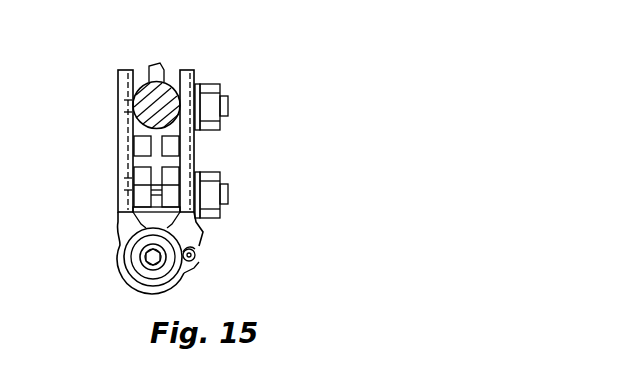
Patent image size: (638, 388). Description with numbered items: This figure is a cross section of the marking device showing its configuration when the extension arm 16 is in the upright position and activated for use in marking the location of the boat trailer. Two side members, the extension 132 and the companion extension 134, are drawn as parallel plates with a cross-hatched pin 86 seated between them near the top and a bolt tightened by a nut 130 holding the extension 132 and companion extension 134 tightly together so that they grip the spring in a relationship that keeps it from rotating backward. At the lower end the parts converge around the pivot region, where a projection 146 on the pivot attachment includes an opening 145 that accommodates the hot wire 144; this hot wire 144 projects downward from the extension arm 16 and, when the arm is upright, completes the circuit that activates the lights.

The pivot pin 86 is at (153, 64).
The extension 132 is at (118, 133).
The companion extension 134 is at (185, 142).
The nut 130 is at (223, 188).
The extension arm 16 is at (124, 256).
The projection 146 is at (195, 248).
The hot wire 144 is at (196, 255).
The opening 145 is at (186, 266).